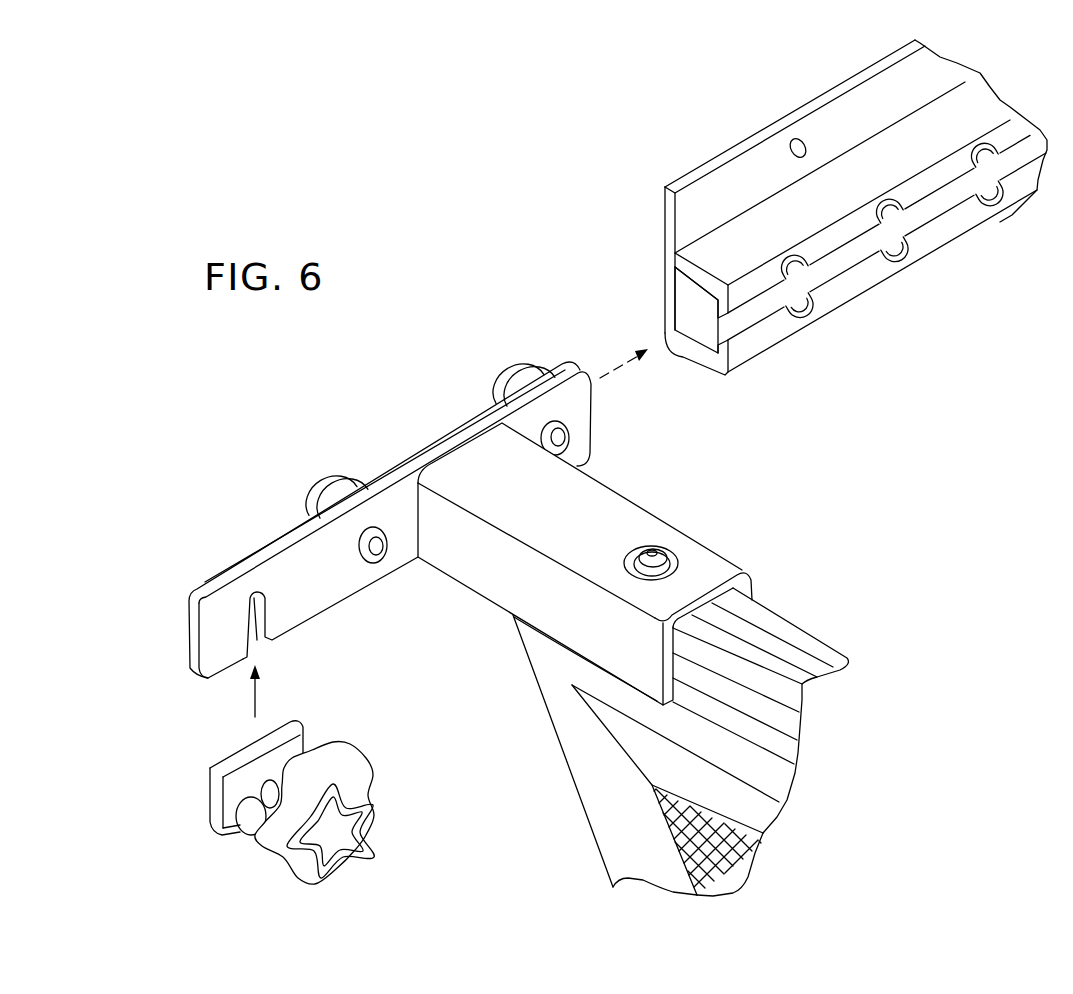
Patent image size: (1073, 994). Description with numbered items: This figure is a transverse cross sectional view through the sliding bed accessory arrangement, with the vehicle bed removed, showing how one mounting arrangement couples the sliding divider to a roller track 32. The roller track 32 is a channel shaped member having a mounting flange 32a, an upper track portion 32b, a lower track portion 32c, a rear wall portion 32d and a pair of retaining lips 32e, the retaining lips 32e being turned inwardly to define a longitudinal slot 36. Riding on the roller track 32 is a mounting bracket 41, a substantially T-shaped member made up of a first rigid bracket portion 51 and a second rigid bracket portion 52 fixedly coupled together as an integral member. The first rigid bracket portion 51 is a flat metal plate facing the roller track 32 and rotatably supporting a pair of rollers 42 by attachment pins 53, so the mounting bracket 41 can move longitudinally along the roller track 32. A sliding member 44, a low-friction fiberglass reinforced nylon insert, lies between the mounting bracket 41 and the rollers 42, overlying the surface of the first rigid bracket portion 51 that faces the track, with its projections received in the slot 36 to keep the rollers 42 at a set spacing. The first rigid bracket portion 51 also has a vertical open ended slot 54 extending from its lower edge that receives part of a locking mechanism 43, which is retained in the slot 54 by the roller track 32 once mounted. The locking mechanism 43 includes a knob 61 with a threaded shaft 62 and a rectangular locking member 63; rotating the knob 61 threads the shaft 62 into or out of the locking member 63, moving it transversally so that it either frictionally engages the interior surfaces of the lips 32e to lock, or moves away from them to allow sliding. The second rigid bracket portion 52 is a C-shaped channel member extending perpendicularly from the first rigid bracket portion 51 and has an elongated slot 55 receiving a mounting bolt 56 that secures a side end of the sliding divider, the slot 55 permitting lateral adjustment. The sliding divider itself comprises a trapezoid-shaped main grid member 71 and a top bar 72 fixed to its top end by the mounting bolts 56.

The roller track 32 is at (809, 232).
The mounting flange 32a is at (800, 112).
The upper track portion 32b is at (700, 268).
The lower track portion 32c is at (695, 365).
The rear wall portion 32d is at (660, 300).
The retaining lips 32e is at (933, 195).
The longitudinal slot 36 is at (838, 272).
The mounting bracket 41 is at (385, 518).
The rollers 42 is at (498, 386).
The locking mechanism 43 is at (294, 798).
The sliding member 44 is at (207, 570).
The first rigid bracket portion 51 is at (340, 610).
The second rigid bracket portion 52 is at (591, 564).
The attachment pins 53 is at (567, 432).
The vertical open ended slot 54 is at (270, 648).
The elongated slot 55 is at (680, 574).
The mounting bolt 56 is at (663, 551).
The knob 61 is at (373, 800).
The threaded shaft 62 is at (239, 836).
The locking member 63 is at (208, 806).
The main grid member 71 is at (753, 822).
The top bar 72 is at (818, 638).